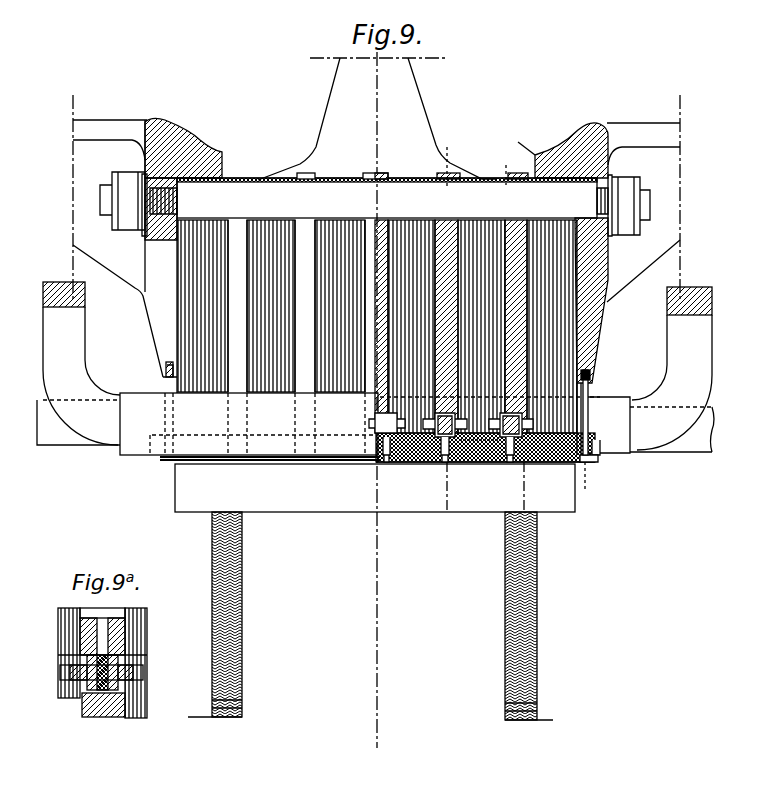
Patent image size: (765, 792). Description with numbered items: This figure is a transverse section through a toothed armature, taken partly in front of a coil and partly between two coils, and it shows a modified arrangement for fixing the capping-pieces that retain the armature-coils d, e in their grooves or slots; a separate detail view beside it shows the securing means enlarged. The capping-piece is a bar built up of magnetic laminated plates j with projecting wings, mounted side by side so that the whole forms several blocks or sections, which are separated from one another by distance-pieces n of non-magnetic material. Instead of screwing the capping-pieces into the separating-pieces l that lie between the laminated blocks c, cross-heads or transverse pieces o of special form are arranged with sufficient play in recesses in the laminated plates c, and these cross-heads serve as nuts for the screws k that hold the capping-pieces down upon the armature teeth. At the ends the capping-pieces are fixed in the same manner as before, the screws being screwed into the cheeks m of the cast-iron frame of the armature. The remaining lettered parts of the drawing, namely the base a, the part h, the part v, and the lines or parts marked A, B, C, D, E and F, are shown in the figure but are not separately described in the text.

The base pedestal a is at (375, 592).
The laminated blocks c is at (271, 306).
The armature-coil d is at (375, 367).
The armature-coil e is at (375, 408).
The packing ring h is at (392, 462).
The magnetic laminated plates j is at (490, 462).
The screws k is at (460, 462).
The separating-pieces l is at (487, 326).
The cheeks m is at (376, 286).
The distance-pieces n is at (570, 462).
The cross-heads o is at (376, 420).
The valve v is at (598, 462).
The control rod A is at (583, 401).
The valve seat line B is at (589, 478).
The top plate C is at (387, 186).
The axis line D is at (436, 487).
The packing strip E is at (518, 163).
The axis line F is at (528, 487).